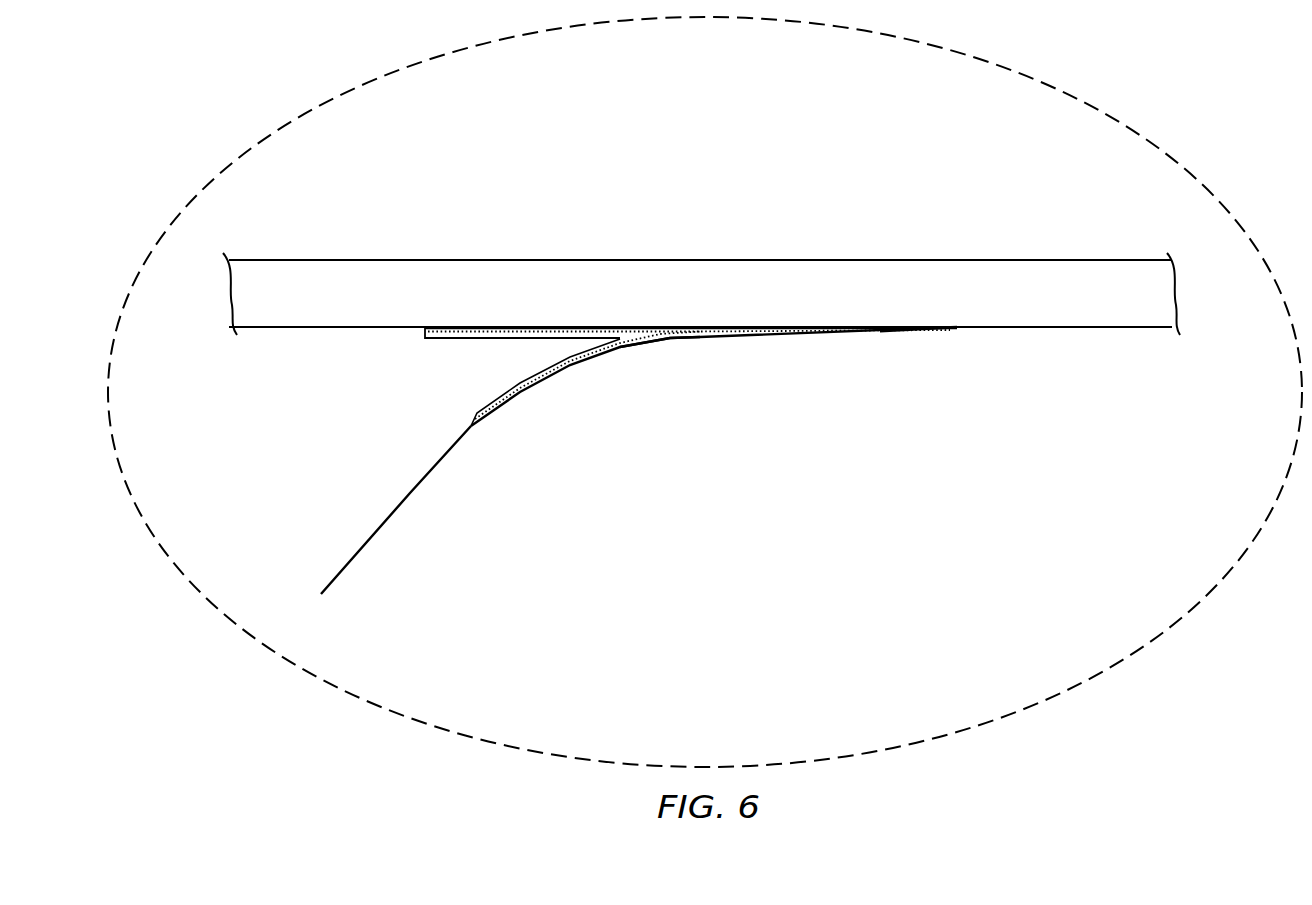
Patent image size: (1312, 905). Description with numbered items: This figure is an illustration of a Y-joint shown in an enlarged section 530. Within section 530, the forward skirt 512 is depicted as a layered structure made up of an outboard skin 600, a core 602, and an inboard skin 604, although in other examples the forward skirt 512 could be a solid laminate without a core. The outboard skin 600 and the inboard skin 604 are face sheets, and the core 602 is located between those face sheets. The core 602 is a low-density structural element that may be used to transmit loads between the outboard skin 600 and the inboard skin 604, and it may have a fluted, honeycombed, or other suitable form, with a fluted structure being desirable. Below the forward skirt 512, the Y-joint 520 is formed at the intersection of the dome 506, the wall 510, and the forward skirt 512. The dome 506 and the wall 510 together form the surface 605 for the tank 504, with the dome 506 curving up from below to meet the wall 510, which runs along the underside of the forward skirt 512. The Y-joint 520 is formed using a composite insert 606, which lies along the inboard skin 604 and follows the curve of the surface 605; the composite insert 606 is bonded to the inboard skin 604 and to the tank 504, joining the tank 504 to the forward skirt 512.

The section 530 is at (305, 115).
The outboard skin 600 is at (377, 260).
The forward skirt 512 is at (570, 260).
The core 602 is at (725, 308).
The inboard skin 604 is at (375, 328).
The composite insert 606 is at (504, 379).
The surface 605 is at (533, 390).
The dome 506 is at (407, 497).
The Y-joint 520 is at (688, 365).
The wall 510 is at (915, 333).
The tank 504 is at (645, 526).